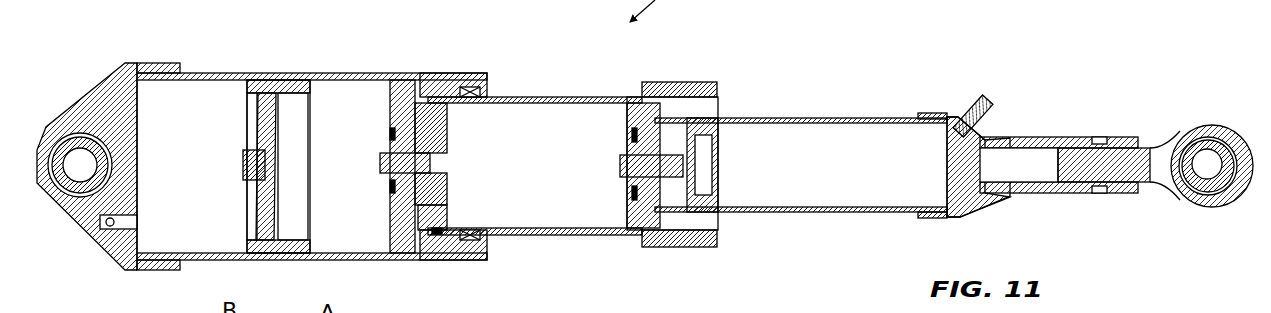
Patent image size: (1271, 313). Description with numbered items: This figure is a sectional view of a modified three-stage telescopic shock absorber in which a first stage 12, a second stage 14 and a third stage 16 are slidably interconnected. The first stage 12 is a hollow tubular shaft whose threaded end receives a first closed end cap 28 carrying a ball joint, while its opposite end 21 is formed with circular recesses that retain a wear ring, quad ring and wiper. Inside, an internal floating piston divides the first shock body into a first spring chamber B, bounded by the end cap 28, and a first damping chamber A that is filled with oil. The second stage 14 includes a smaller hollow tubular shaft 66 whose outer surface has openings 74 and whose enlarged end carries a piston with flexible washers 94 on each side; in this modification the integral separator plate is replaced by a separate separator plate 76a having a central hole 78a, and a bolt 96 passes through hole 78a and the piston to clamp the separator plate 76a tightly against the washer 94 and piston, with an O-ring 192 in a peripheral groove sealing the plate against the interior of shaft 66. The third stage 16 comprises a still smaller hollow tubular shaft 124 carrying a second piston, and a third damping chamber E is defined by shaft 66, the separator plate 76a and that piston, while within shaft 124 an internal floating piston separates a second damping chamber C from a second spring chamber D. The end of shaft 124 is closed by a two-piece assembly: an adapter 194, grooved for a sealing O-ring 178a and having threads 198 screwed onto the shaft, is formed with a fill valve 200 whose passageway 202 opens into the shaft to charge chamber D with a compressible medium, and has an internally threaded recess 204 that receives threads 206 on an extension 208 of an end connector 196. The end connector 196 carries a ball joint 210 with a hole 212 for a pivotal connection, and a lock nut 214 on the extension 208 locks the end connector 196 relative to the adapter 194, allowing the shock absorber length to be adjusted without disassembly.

The first stage 12 is at (402, 58).
The second stage 14 is at (519, 94).
The third stage 16 is at (759, 110).
The end of shaft 21 is at (478, 80).
The first closed end cap 28 is at (86, 98).
The hollow tubular cylindrical shaft 66 is at (570, 236).
The openings 74 is at (392, 110).
The separator plate 76a is at (440, 135).
The central hole 78a is at (440, 185).
The flexible washers 94 is at (435, 196).
The bolt 96 is at (432, 158).
The hollow tubular cylindrical shaft 124 is at (791, 212).
The sealing O-ring 178a is at (946, 216).
The O-ring 192 is at (438, 238).
The adapter 194 is at (1000, 137).
The end connector 196 is at (1245, 130).
The threads 198 is at (936, 121).
The fill valve 200 is at (975, 106).
The passageway 202 is at (985, 101).
The internal recess 204 is at (1018, 170).
The threads 206 is at (1147, 188).
The extension 208 is at (1080, 170).
The ball joint 210 is at (1198, 134).
The hole 212 is at (1205, 176).
The lock nut 214 is at (1122, 137).
The first damping chamber A is at (333, 98).
The first spring chamber B is at (198, 98).
The second damping chamber C is at (678, 140).
The second spring chamber D is at (836, 140).
The third damping chamber E is at (592, 120).